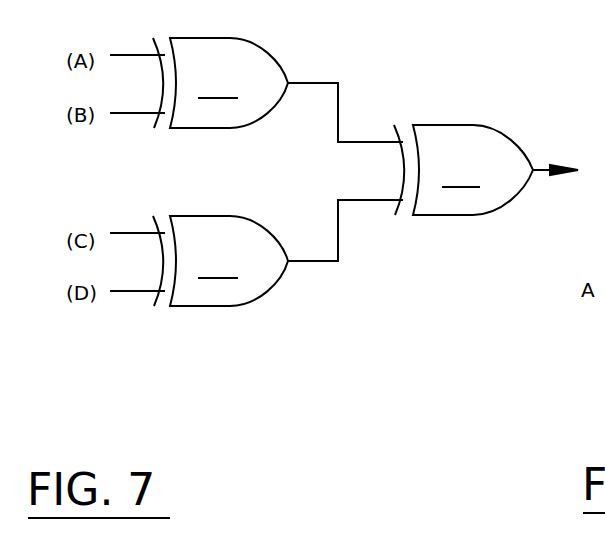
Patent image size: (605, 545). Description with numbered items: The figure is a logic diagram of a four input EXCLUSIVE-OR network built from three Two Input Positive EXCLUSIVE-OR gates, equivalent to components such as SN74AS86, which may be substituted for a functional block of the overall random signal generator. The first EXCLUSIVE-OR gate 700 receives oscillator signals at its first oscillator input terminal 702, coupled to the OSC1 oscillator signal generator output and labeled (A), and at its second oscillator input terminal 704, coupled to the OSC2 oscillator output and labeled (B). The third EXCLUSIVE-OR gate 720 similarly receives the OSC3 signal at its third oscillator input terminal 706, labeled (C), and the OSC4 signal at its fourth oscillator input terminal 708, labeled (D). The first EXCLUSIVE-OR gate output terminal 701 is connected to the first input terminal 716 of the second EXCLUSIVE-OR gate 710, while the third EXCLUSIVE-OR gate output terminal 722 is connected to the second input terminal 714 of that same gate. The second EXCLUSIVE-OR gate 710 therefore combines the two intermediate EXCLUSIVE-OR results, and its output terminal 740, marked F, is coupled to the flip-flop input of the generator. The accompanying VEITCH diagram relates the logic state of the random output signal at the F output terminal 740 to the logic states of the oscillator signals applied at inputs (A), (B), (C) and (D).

The first EXCLUSIVE-OR gate 700 is at (220, 83).
The first EXCLUSIVE-OR gate output terminal 701 is at (288, 75).
The first oscillator input terminal 702 is at (127, 55).
The second oscillator input terminal 704 is at (127, 113).
The third oscillator input terminal 706 is at (128, 233).
The fourth oscillator input terminal 708 is at (128, 291).
The second EXCLUSIVE-OR gate 710 is at (463, 170).
The second EXCLUSIVE-OR gate second input terminal 714 is at (389, 205).
The second EXCLUSIVE-OR gate first input terminal 716 is at (381, 141).
The third EXCLUSIVE-OR gate 720 is at (220, 261).
The third EXCLUSIVE-OR gate output terminal 722 is at (297, 257).
The second EXCLUSIVE-OR gate output terminal 740 is at (549, 164).